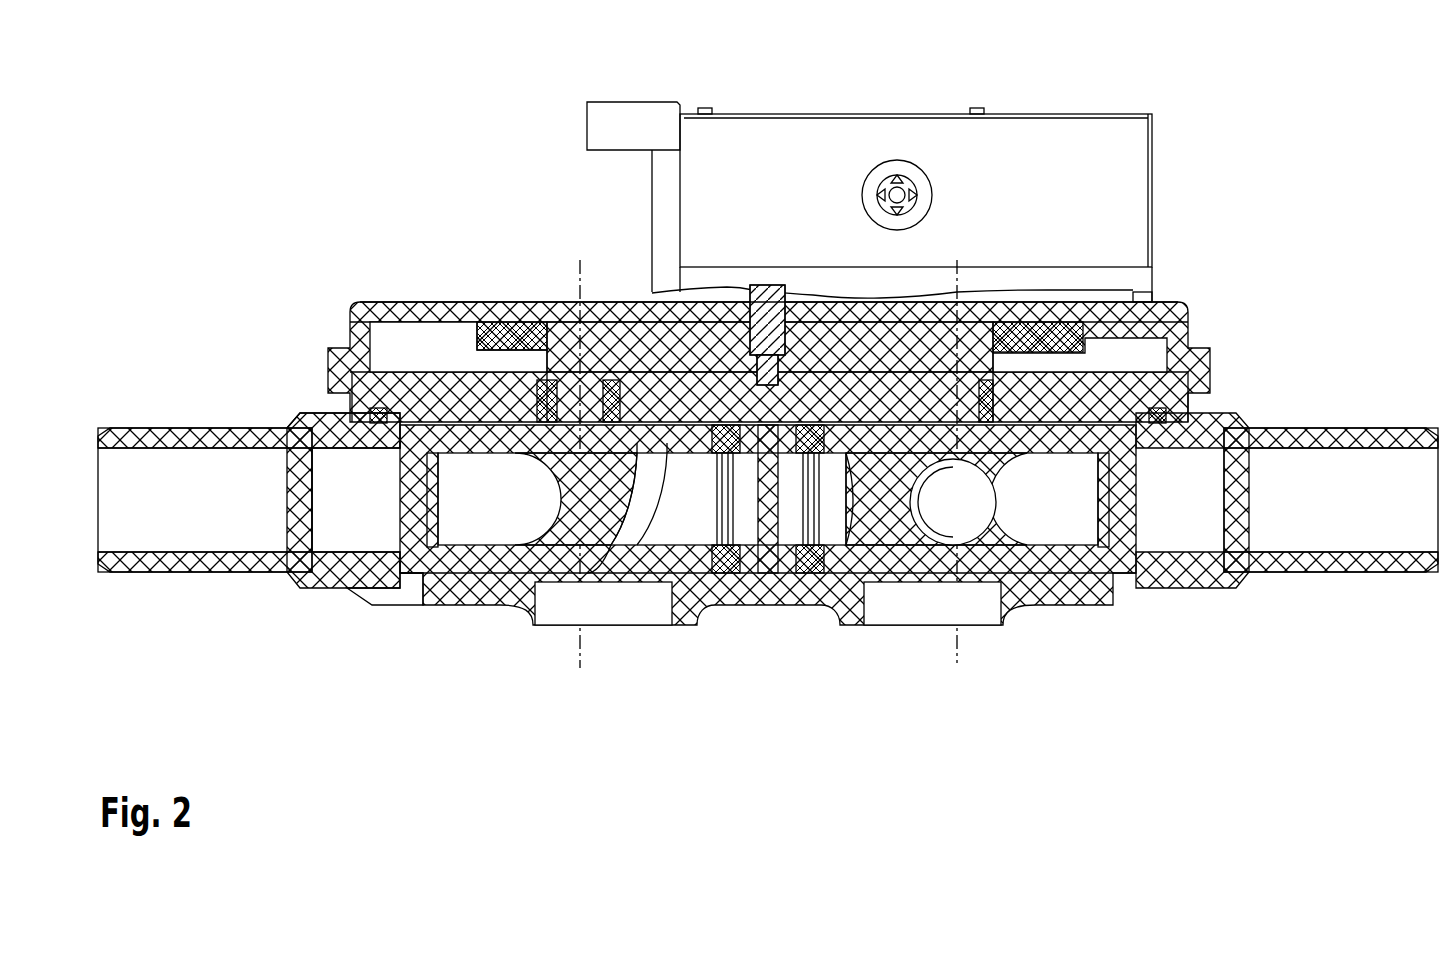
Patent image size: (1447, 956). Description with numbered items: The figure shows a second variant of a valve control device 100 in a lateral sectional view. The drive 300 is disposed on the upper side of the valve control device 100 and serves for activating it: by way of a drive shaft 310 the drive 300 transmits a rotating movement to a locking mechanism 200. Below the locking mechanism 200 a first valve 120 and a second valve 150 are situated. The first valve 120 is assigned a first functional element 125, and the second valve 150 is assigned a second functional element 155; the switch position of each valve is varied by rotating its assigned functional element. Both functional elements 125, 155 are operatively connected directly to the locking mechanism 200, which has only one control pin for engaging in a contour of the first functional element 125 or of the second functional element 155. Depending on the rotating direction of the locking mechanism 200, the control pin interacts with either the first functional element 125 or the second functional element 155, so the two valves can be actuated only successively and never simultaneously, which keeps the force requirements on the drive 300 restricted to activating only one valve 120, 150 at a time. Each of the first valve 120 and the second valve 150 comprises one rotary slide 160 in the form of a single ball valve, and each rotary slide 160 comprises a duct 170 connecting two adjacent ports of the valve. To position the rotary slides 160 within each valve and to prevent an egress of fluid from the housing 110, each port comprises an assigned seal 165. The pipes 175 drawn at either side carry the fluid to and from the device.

The valve control device 100 is at (1258, 108).
The housing 110 is at (510, 318).
The first valve 120 is at (575, 557).
The first functional element 125 is at (463, 303).
The second valve 150 is at (968, 560).
The second functional element 155 is at (1085, 348).
The rotary slide 160 is at (572, 345).
The seal 165 is at (420, 485).
The duct 170 is at (468, 530).
The pipe 175 is at (153, 515).
The locking mechanism 200 is at (668, 328).
The drive 300 is at (837, 114).
The drive shaft 310 is at (762, 292).